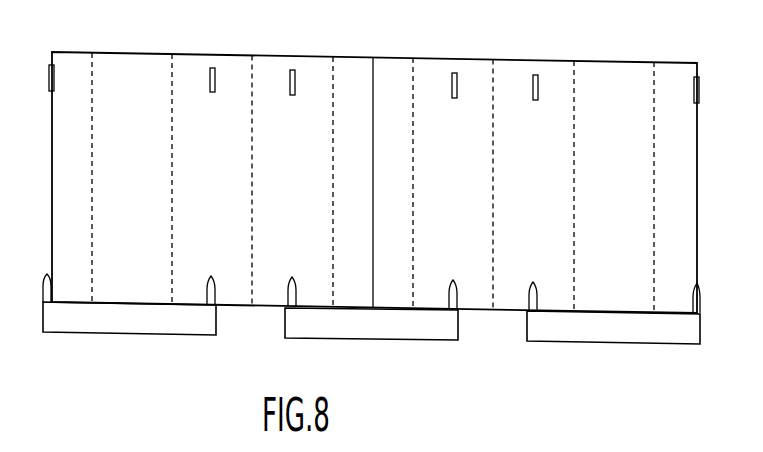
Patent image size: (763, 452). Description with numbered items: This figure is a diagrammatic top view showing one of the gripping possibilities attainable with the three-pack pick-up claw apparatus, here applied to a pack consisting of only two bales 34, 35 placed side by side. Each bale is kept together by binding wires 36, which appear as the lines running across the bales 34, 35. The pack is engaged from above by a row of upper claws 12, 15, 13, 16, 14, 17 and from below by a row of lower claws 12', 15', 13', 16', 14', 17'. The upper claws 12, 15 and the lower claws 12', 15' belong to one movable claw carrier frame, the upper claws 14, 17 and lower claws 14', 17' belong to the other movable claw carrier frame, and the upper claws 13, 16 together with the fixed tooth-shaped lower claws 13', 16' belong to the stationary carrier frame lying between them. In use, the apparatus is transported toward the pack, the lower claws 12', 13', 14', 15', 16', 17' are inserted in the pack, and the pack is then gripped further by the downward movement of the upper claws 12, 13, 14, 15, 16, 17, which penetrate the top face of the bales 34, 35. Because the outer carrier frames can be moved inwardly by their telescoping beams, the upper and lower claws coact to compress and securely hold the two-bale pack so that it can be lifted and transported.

The upper claw 12 is at (37, 84).
The upper claw 13 is at (307, 60).
The upper claw 14 is at (544, 65).
The upper claw 15 is at (221, 56).
The upper claw 16 is at (458, 61).
The upper claw 17 is at (716, 96).
The lower claw 12' is at (32, 282).
The lower claw 13' is at (277, 321).
The lower claw 14' is at (517, 317).
The lower claw 15' is at (225, 321).
The lower claw 16' is at (469, 323).
The lower claw 17' is at (718, 296).
The bale 34 is at (219, 197).
The bale 35 is at (539, 210).
The binding wires 36 is at (252, 138).